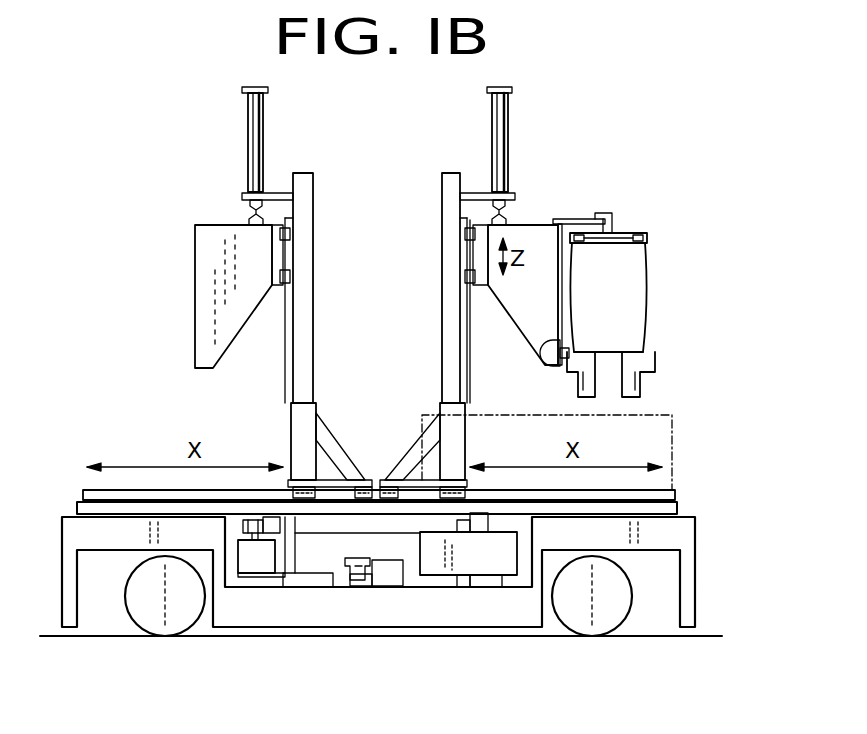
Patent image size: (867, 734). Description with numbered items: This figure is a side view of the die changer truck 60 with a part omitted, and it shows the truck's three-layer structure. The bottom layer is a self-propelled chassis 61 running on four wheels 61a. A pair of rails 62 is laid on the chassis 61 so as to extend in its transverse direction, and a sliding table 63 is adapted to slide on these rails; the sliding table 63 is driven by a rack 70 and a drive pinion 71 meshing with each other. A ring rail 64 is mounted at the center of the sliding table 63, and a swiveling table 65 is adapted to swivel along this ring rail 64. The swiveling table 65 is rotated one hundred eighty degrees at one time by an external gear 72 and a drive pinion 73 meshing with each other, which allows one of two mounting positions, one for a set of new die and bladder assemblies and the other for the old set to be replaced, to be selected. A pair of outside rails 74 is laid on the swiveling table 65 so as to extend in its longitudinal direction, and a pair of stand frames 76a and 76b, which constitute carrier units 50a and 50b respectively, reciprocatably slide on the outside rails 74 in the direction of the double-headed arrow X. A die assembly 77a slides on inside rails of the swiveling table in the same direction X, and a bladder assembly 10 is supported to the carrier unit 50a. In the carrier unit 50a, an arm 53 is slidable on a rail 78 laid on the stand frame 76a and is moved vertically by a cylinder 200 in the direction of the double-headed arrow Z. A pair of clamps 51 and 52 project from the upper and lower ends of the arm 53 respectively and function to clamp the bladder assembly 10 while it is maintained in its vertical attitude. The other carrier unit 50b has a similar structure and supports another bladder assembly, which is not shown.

The bladder assembly 10 is at (660, 283).
The carrier unit 50a is at (574, 146).
The carrier unit 50b is at (206, 156).
The upper clamp 51 is at (584, 220).
The lower clamp 52 is at (555, 340).
The arm 53 is at (531, 222).
The die changer truck 60 is at (165, 358).
The self-propelled chassis 61 is at (697, 564).
The wheels 61a is at (142, 612).
The rails 62 is at (303, 580).
The sliding table 63 is at (466, 568).
The ring rail 64 is at (430, 541).
The swiveling table 65 is at (678, 508).
The rack 70 is at (360, 560).
The drive pinion 71 is at (357, 580).
The external gear 72 is at (270, 540).
The drive pinion 73 is at (247, 520).
The outside rails 74 is at (664, 490).
The stand frame 76a is at (442, 190).
The stand frame 76b is at (313, 190).
The die assembly 77a is at (673, 420).
The rail 78 is at (468, 310).
The cylinder 200 is at (508, 112).